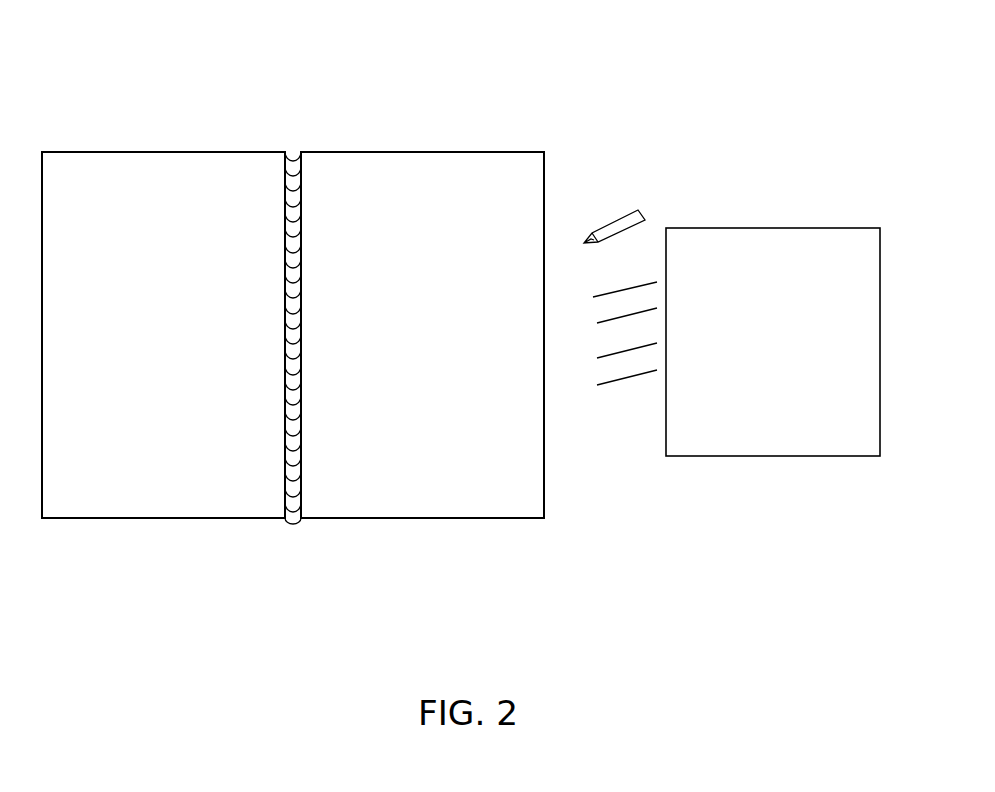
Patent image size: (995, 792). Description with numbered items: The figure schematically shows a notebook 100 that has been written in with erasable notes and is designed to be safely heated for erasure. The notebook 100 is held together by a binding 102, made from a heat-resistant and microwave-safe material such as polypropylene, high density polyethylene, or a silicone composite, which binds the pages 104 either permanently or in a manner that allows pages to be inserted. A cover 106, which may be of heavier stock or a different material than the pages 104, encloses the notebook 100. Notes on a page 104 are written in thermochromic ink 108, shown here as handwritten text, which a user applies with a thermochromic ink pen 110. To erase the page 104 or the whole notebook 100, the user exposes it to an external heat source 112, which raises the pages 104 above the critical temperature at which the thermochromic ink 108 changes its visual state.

The notebook 100 is at (471, 85).
The binding 102 is at (292, 152).
The pages 104 is at (505, 410).
The cover 106 is at (133, 198).
The thermochromic ink 108 is at (390, 190).
The thermochromic ink pen 110 is at (620, 218).
The external heat source 112 is at (795, 228).